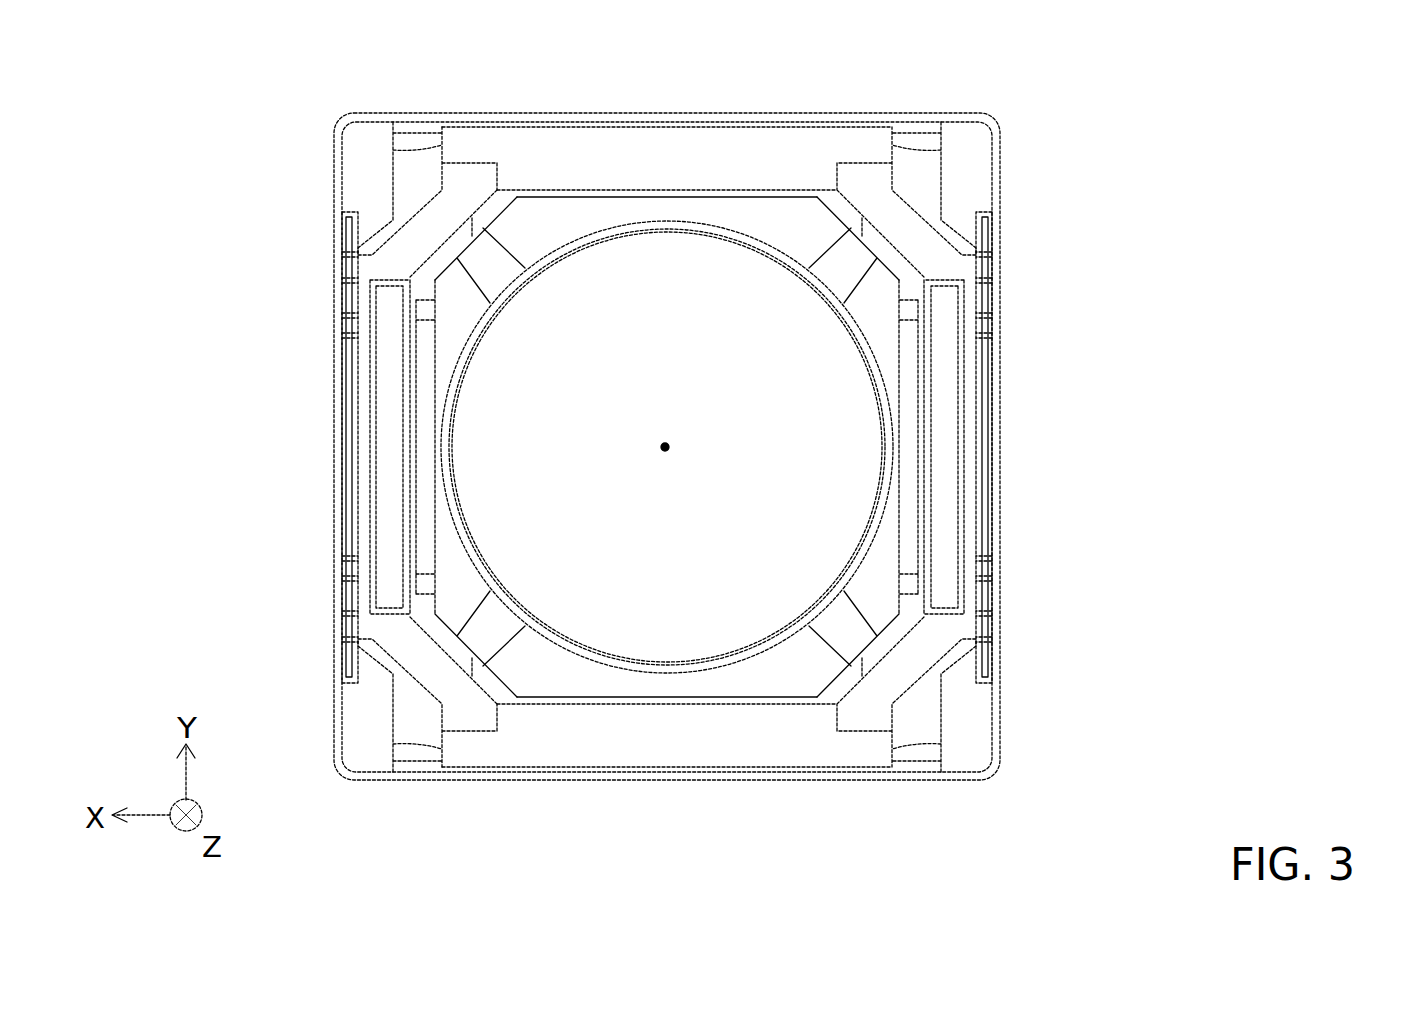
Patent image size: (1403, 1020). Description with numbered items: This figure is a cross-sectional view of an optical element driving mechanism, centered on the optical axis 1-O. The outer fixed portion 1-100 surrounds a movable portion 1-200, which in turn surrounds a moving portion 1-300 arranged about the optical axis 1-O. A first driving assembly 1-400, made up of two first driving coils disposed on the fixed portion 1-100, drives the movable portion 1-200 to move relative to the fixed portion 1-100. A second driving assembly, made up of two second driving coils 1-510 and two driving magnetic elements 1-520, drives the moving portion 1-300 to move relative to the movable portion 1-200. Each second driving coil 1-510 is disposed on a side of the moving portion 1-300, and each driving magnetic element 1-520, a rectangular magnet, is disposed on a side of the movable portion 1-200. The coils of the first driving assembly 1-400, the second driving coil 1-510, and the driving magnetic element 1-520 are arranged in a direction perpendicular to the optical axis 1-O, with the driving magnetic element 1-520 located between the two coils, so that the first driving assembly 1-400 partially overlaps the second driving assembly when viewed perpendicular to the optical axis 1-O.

The fixed portion 1-100 is at (1000, 178).
The movable portion 1-200 is at (608, 155).
The moving portion 1-300 is at (772, 215).
The first driving assembly 1-400 is at (345, 387).
The second driving coil 1-510 is at (420, 525).
The driving magnetic element 1-520 is at (390, 457).
The optical axis 1-O is at (691, 463).